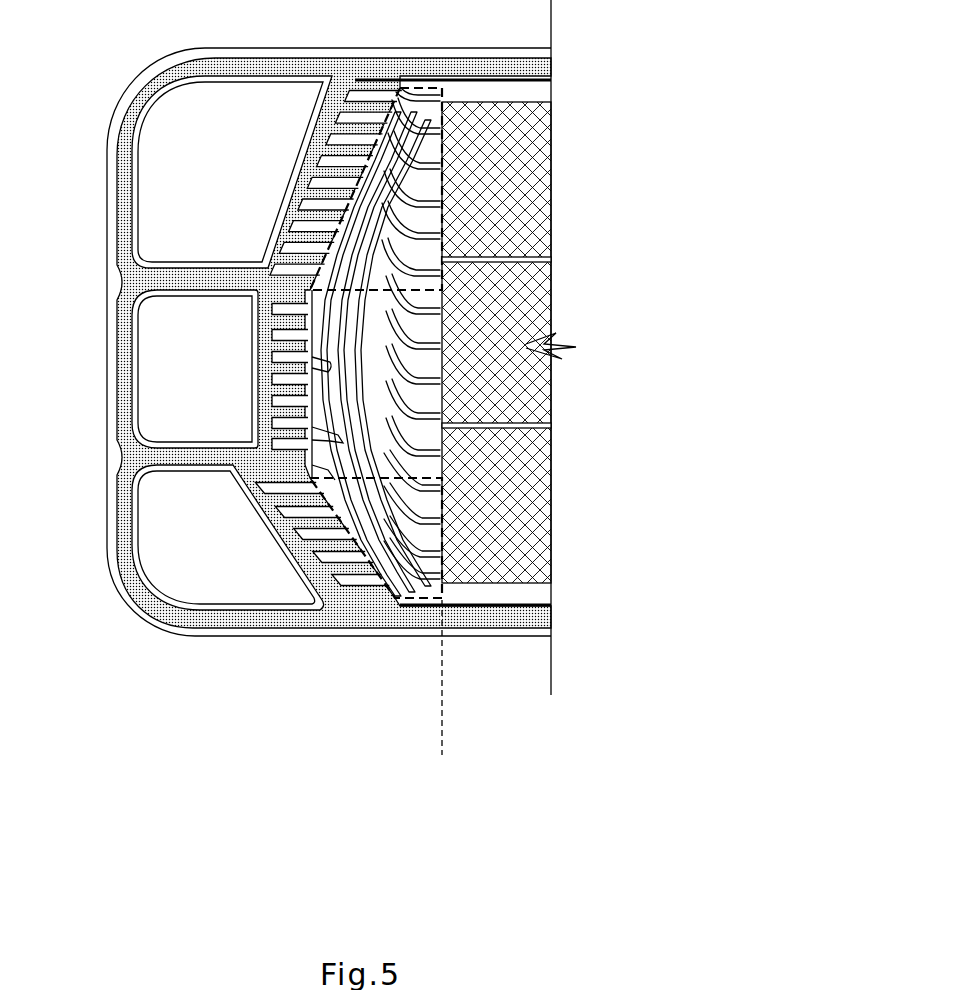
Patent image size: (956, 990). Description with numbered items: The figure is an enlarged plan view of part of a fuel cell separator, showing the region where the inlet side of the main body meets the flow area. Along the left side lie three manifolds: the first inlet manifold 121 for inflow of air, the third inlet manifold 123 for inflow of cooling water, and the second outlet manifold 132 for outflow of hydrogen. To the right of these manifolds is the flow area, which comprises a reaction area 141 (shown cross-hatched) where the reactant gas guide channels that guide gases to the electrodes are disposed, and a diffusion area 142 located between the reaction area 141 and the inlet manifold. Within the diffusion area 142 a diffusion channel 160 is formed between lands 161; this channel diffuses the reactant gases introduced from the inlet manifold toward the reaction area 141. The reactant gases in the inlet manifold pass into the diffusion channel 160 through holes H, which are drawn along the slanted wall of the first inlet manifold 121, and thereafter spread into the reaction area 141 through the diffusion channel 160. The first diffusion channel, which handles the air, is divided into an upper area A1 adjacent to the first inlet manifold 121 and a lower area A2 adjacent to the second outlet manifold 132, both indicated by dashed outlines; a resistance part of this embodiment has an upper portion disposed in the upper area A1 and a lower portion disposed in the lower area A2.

The first inlet manifold 121 is at (181, 188).
The third inlet manifold 123 is at (181, 372).
The second outlet manifold 132 is at (181, 532).
The holes H is at (358, 100).
The upper area A1 is at (418, 90).
The lower area A2 is at (398, 600).
The reaction area 141 is at (530, 513).
The diffusion area 142 is at (440, 742).
The diffusion channel 160 is at (402, 540).
The lands 161 is at (380, 532).